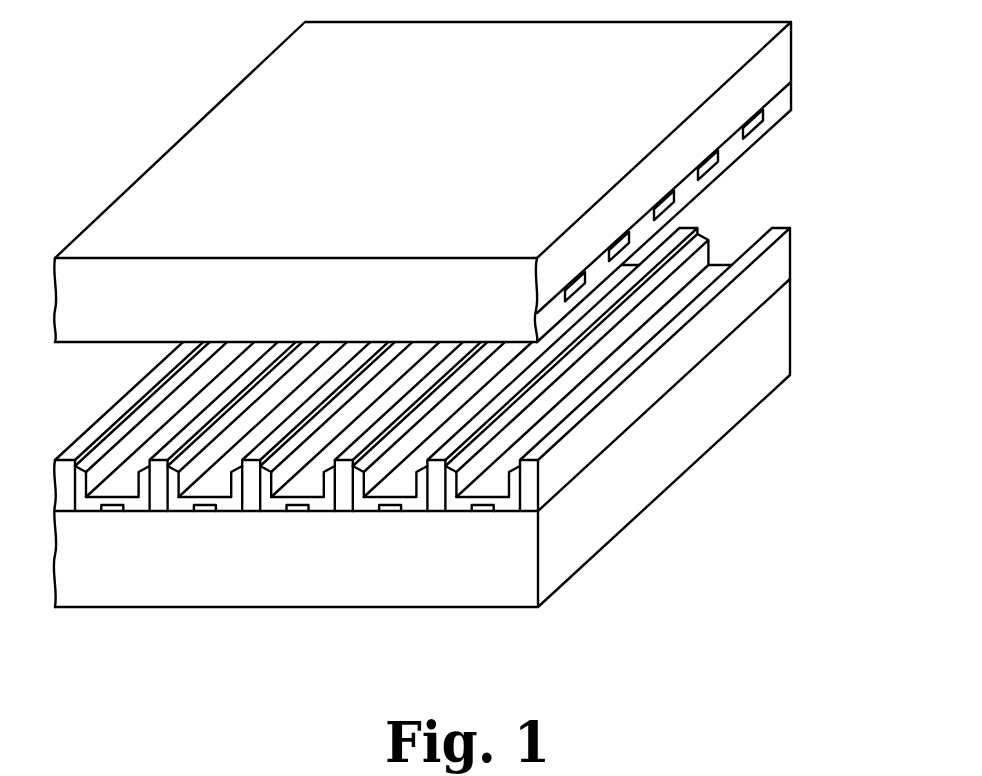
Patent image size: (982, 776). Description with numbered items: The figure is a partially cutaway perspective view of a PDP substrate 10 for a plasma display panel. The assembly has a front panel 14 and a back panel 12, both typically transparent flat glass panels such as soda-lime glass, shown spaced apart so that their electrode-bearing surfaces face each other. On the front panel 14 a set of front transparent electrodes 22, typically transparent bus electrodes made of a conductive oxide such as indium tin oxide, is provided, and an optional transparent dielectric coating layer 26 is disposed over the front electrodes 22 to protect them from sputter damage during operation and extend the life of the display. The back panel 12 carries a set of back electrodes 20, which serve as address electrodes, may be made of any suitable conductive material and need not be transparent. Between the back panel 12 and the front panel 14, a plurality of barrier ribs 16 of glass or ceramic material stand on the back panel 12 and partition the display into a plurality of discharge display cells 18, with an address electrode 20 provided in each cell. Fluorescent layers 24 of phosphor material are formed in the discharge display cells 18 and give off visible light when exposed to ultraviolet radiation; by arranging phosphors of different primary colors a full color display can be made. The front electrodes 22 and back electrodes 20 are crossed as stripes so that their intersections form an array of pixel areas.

The PDP substrate 10 is at (122, 100).
The back panel 12 is at (778, 360).
The front panel 14 is at (780, 67).
The barrier ribs 16 is at (533, 500).
The discharge display cells 18 is at (488, 482).
The back electrodes 20 is at (483, 512).
The front transparent electrodes 22 is at (764, 122).
The fluorescent layers 24 is at (457, 507).
The transparent dielectric coating layer 26 is at (792, 98).